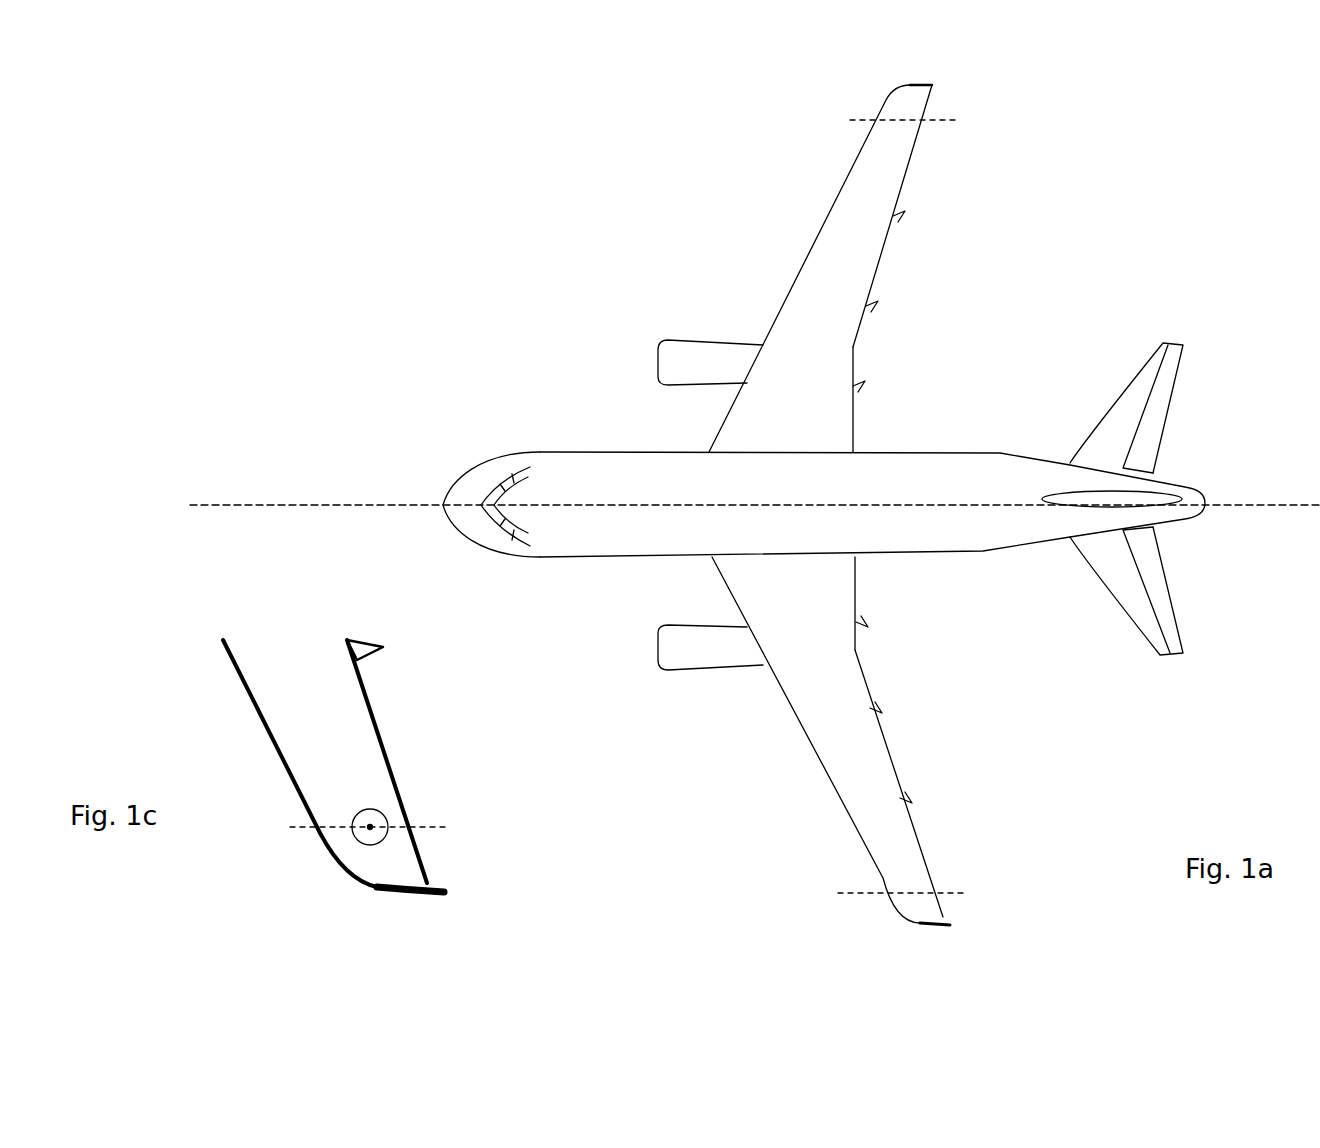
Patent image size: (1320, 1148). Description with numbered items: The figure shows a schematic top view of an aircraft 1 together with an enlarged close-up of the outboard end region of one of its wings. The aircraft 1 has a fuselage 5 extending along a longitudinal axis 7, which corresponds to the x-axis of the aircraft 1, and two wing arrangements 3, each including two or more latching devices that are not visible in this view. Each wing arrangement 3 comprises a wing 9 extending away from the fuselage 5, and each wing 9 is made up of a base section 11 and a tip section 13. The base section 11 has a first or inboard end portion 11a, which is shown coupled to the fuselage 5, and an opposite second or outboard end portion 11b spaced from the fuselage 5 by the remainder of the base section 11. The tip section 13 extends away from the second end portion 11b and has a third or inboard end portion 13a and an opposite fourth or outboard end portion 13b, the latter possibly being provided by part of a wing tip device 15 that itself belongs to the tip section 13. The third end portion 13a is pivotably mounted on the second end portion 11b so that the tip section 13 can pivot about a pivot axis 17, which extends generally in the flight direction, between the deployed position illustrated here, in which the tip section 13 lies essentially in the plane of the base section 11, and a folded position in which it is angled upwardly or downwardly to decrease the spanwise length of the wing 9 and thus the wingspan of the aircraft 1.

In FIG. 1A, the aircraft 1 is at (1131, 229).
In FIG. 1A, the wing arrangement 3 is at (746, 199).
In FIG. 1A, the fuselage 5 is at (992, 548).
In FIG. 1A, the longitudinal axis 7 is at (225, 498).
In FIG. 1A, the wing 9 is at (790, 285).
In FIG. 1A, the base section 11 is at (853, 273).
In FIG. 1C, the base section 11 is at (263, 688).
In FIG. 1A, the first end portion 11a is at (833, 440).
In FIG. 1A, the second end portion 11b is at (920, 128).
In FIG. 1C, the second end portion 11b is at (417, 803).
In FIG. 1A, the tip section 13 is at (910, 98).
In FIG. 1C, the tip section 13 is at (370, 865).
In FIG. 1C, the third end portion 13a is at (312, 851).
In FIG. 1C, the fourth end portion 13b is at (464, 890).
In FIG. 1A, the wing tip device 15 is at (932, 85).
In FIG. 1A, the pivot axis 17 is at (853, 120).
In FIG. 1C, the pivot axis 17 is at (418, 828).